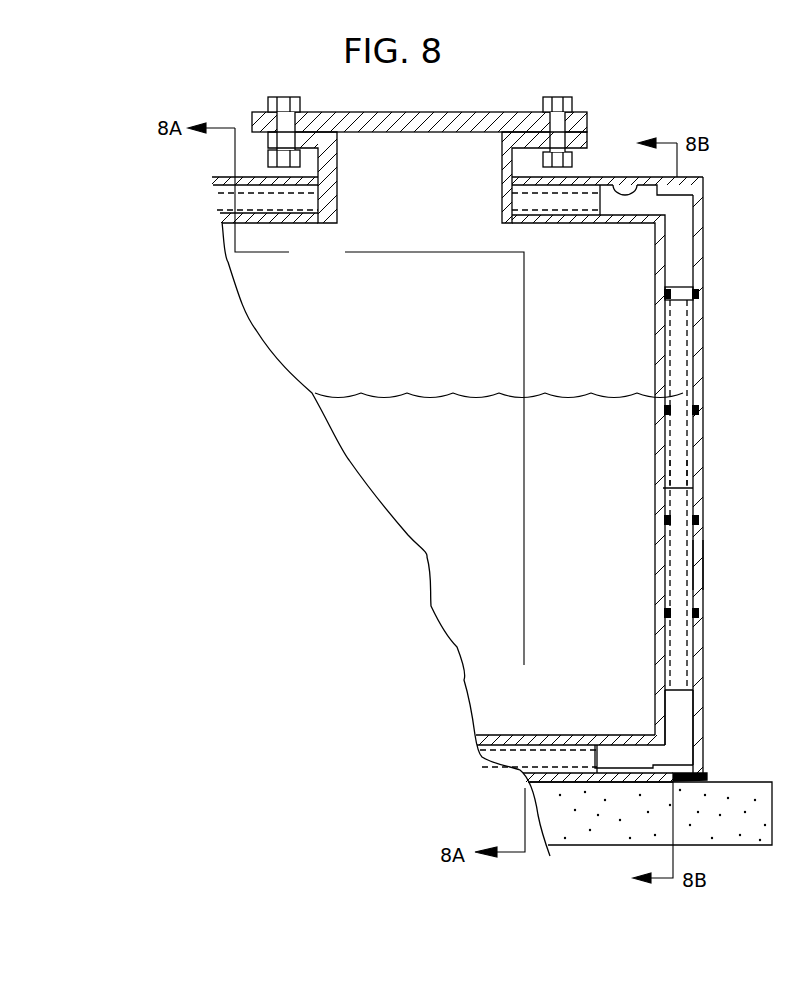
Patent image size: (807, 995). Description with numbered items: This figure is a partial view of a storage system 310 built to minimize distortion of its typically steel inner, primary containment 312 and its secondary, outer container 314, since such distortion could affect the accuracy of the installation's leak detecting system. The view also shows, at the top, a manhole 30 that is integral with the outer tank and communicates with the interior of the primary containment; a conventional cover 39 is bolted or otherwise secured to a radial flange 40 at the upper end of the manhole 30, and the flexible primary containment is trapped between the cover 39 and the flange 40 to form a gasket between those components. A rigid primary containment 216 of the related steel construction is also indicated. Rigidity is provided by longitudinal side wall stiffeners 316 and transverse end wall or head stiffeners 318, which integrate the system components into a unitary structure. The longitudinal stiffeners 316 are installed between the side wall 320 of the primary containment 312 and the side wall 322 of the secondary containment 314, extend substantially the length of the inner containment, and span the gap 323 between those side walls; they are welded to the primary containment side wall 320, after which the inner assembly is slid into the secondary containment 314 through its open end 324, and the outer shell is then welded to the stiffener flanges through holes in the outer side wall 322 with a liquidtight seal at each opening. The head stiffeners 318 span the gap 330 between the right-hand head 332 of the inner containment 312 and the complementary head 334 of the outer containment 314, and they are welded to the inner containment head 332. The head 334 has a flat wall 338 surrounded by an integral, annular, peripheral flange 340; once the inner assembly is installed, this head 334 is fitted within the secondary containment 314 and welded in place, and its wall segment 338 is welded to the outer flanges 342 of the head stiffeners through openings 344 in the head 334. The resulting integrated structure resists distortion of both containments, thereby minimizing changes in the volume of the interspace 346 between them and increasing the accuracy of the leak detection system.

The manhole 30 is at (338, 165).
The cover 39 is at (318, 112).
The radial flange 40 is at (522, 132).
The rigid primary containment 216 is at (668, 490).
The storage system 310 is at (622, 100).
The primary containment 312 is at (215, 208).
The secondary containment 314 is at (210, 170).
The longitudinal side wall stiffeners 316 is at (300, 222).
The transverse end wall stiffeners 318 is at (697, 434).
The primary containment side wall 320 is at (483, 735).
The secondary containment side wall 322 is at (515, 772).
The gap 323 is at (633, 758).
The open end 324 is at (706, 778).
The gap 330 is at (683, 710).
The inner containment head 332 is at (690, 606).
The outer containment head 334 is at (716, 564).
The flat wall 338 is at (706, 342).
The peripheral flange 340 is at (703, 187).
The outer flanges 342 is at (688, 473).
The openings 344 is at (707, 295).
The interspace 346 is at (632, 187).